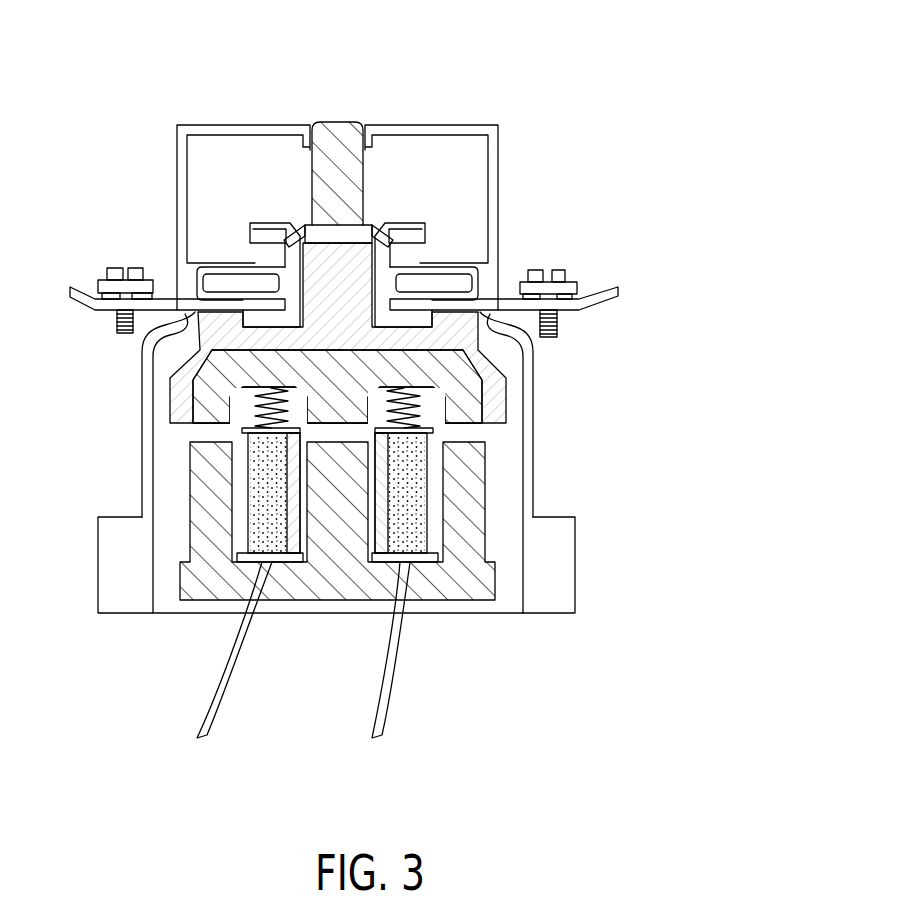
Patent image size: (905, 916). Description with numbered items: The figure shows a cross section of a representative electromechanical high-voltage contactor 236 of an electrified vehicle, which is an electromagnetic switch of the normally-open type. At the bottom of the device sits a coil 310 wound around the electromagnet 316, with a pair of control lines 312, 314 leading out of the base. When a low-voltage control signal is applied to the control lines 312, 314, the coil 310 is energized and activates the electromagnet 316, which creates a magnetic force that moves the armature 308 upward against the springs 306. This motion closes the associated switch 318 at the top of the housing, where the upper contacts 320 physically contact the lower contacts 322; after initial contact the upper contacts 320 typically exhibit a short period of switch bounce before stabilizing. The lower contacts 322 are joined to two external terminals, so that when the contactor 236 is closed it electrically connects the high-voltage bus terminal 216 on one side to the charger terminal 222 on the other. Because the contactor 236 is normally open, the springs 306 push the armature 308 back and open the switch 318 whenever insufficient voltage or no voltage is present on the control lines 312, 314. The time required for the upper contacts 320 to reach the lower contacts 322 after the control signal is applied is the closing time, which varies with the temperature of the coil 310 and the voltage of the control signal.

The contactor 236 is at (522, 78).
The switch 318 is at (261, 224).
The lower contacts 322 is at (257, 258).
The upper contacts 320 is at (397, 221).
The high-voltage bus terminal 216 is at (110, 310).
The charger terminal 222 is at (563, 313).
The armature 308 is at (458, 386).
The springs 306 is at (415, 413).
The coil 310 is at (408, 517).
The electromagnet 316 is at (423, 587).
The control line 312 is at (207, 710).
The control line 314 is at (380, 700).